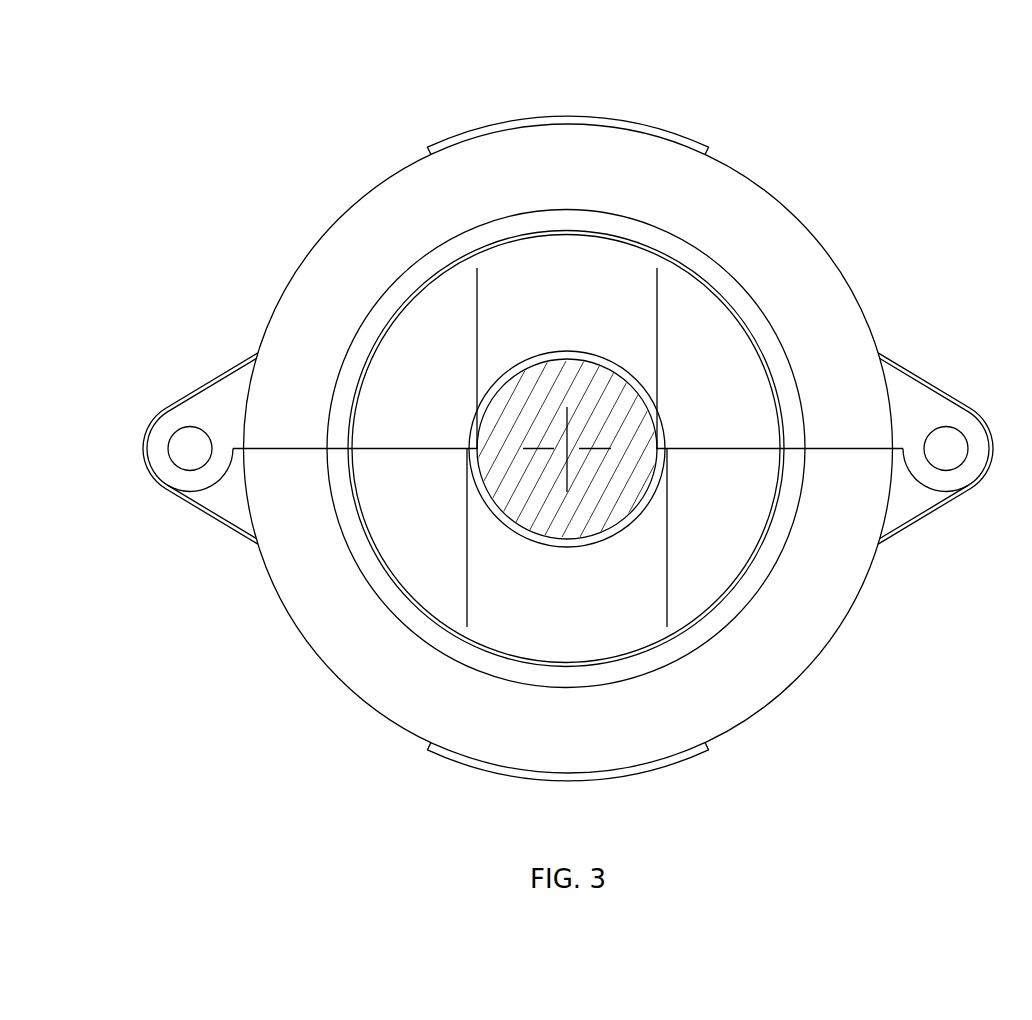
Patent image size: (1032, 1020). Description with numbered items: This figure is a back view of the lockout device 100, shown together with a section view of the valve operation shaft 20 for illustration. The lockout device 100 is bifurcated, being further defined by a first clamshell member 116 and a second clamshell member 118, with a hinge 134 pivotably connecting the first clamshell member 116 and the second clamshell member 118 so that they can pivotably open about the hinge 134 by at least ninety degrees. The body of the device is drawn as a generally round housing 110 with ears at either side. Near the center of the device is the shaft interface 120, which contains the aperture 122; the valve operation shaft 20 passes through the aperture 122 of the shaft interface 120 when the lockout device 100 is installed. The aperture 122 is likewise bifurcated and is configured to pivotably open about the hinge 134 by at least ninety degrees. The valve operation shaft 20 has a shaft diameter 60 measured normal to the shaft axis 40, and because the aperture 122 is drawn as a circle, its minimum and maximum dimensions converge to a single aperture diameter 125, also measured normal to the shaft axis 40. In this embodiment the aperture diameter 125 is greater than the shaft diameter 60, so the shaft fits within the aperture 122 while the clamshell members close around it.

The lockout device 100 is at (945, 160).
The housing 110 is at (833, 260).
The first clamshell member 116 is at (750, 203).
The second clamshell member 118 is at (775, 668).
The shaft interface 120 is at (503, 530).
The aperture 122 is at (593, 350).
The valve operation shaft 20 is at (540, 428).
The shaft axis 40 is at (567, 449).
The shaft diameter 60 is at (657, 284).
The aperture diameter 125 is at (667, 617).
The hinge 134 is at (182, 452).